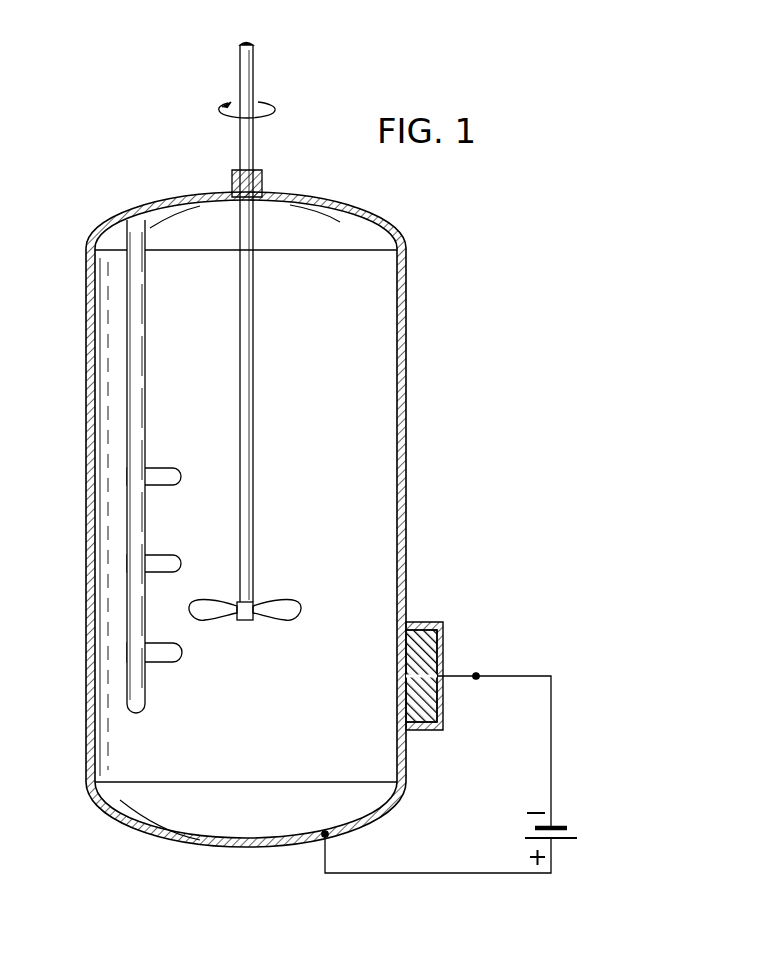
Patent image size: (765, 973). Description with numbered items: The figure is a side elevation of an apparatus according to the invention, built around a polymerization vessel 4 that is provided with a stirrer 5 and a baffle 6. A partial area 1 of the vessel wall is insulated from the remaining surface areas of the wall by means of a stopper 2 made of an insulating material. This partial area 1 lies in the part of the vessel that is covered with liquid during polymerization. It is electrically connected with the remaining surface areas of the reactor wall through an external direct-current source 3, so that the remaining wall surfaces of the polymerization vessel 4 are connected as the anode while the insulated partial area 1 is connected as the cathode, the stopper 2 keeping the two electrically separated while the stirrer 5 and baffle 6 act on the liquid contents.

The partial area of the wall 1 is at (395, 682).
The stopper 2 is at (437, 640).
The external direct-current source 3 is at (560, 819).
The polymerization vessel 4 is at (406, 313).
The stirrer 5 is at (253, 145).
The baffle 6 is at (130, 387).